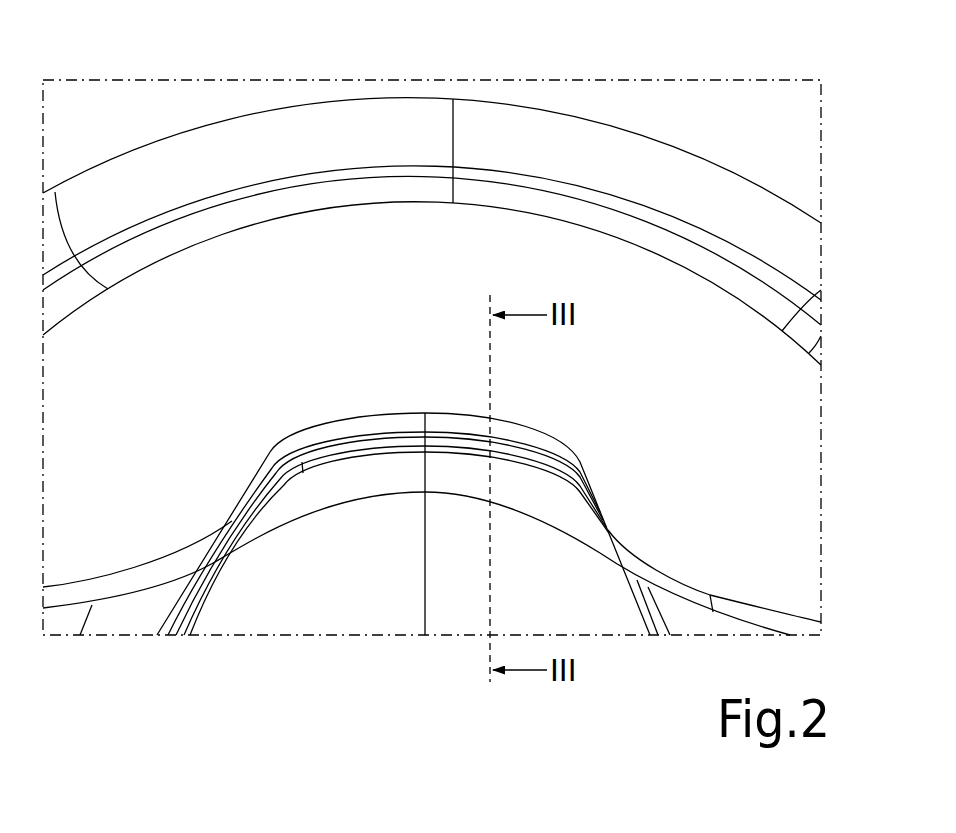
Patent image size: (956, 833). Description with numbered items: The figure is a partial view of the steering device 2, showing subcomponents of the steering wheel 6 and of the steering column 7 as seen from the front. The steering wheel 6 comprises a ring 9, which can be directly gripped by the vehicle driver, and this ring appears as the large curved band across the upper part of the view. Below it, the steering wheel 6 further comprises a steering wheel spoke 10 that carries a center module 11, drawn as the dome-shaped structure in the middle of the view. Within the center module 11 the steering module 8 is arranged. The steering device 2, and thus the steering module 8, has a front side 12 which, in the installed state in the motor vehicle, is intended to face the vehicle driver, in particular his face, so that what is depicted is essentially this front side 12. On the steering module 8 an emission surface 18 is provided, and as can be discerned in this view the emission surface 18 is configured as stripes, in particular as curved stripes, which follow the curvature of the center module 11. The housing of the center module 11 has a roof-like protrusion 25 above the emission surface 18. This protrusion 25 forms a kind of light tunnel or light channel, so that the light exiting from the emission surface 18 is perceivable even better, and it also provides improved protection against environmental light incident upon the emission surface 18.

The steering device 2 is at (170, 120).
The steering wheel 6 is at (383, 125).
The ring 9 is at (582, 147).
The front side 12 is at (700, 135).
The steering module 8 is at (542, 430).
The roof-like protrusion 25 is at (398, 432).
The emission surface 18 is at (332, 457).
The steering wheel spoke 10 is at (242, 555).
The steering column 7 is at (613, 527).
The center module 11 is at (307, 595).